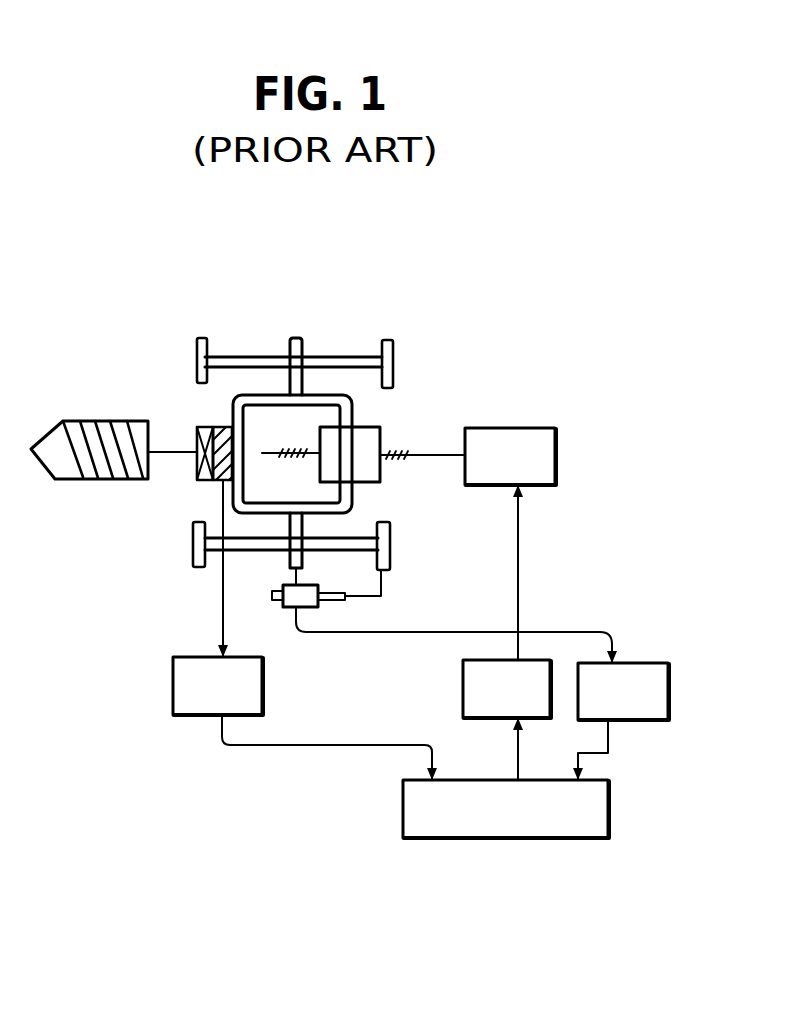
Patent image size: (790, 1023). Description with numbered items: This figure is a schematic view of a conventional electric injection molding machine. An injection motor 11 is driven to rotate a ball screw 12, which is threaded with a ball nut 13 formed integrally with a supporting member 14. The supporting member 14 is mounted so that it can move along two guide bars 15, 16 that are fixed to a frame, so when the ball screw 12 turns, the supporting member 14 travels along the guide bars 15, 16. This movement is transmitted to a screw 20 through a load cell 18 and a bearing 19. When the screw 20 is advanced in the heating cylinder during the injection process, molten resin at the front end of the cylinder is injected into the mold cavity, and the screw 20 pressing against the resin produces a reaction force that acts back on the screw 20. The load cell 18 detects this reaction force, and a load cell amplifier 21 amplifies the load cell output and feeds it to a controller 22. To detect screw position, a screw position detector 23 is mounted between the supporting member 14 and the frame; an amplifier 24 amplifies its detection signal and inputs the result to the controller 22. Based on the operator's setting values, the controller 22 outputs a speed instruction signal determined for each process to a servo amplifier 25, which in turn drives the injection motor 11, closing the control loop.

The injection motor 11 is at (517, 428).
The ball screw 12 is at (428, 458).
The ball nut 13 is at (378, 428).
The supporting member 14 is at (268, 403).
The guide bar 15 is at (336, 362).
The guide bar 16 is at (262, 548).
The load cell 18 is at (221, 483).
The bearing 19 is at (205, 427).
The screw 20 is at (90, 481).
The load cell amplifier 21 is at (264, 692).
The controller 22 is at (609, 818).
The screw position detector 23 is at (306, 603).
The amplifier 24 is at (669, 697).
The servo amplifier 25 is at (462, 698).